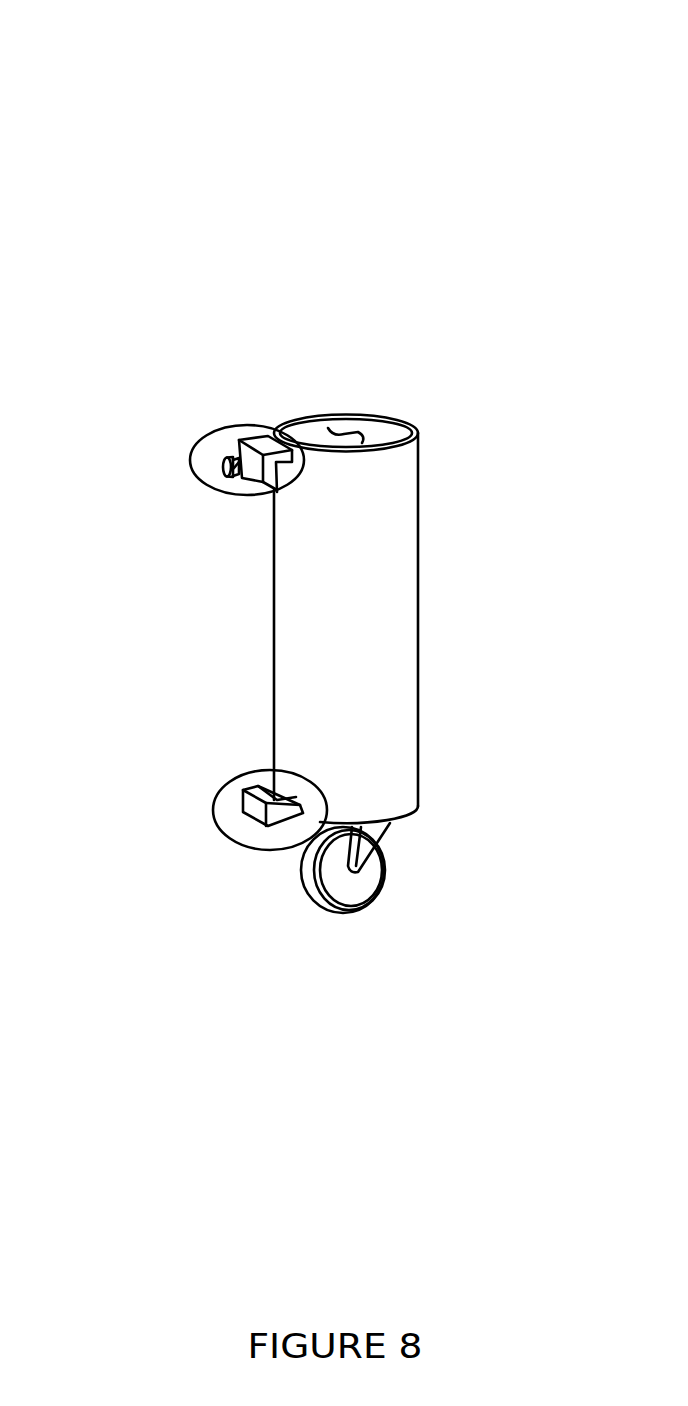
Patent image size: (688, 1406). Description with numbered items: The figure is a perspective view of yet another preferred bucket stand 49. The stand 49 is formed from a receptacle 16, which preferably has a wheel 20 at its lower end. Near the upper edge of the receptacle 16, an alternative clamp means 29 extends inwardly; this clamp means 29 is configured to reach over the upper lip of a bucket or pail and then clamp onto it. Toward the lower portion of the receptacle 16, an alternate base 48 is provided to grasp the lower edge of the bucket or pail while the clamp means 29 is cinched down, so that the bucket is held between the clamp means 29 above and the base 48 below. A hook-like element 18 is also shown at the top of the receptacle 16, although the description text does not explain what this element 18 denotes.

The vacuum canister assembly 49 is at (602, 343).
The cylindrical canister body 16 is at (400, 633).
The hook 18 is at (346, 436).
The upper mounting clip 29 is at (200, 487).
The lower mounting bracket 48 is at (222, 832).
The wheel 20 is at (360, 890).